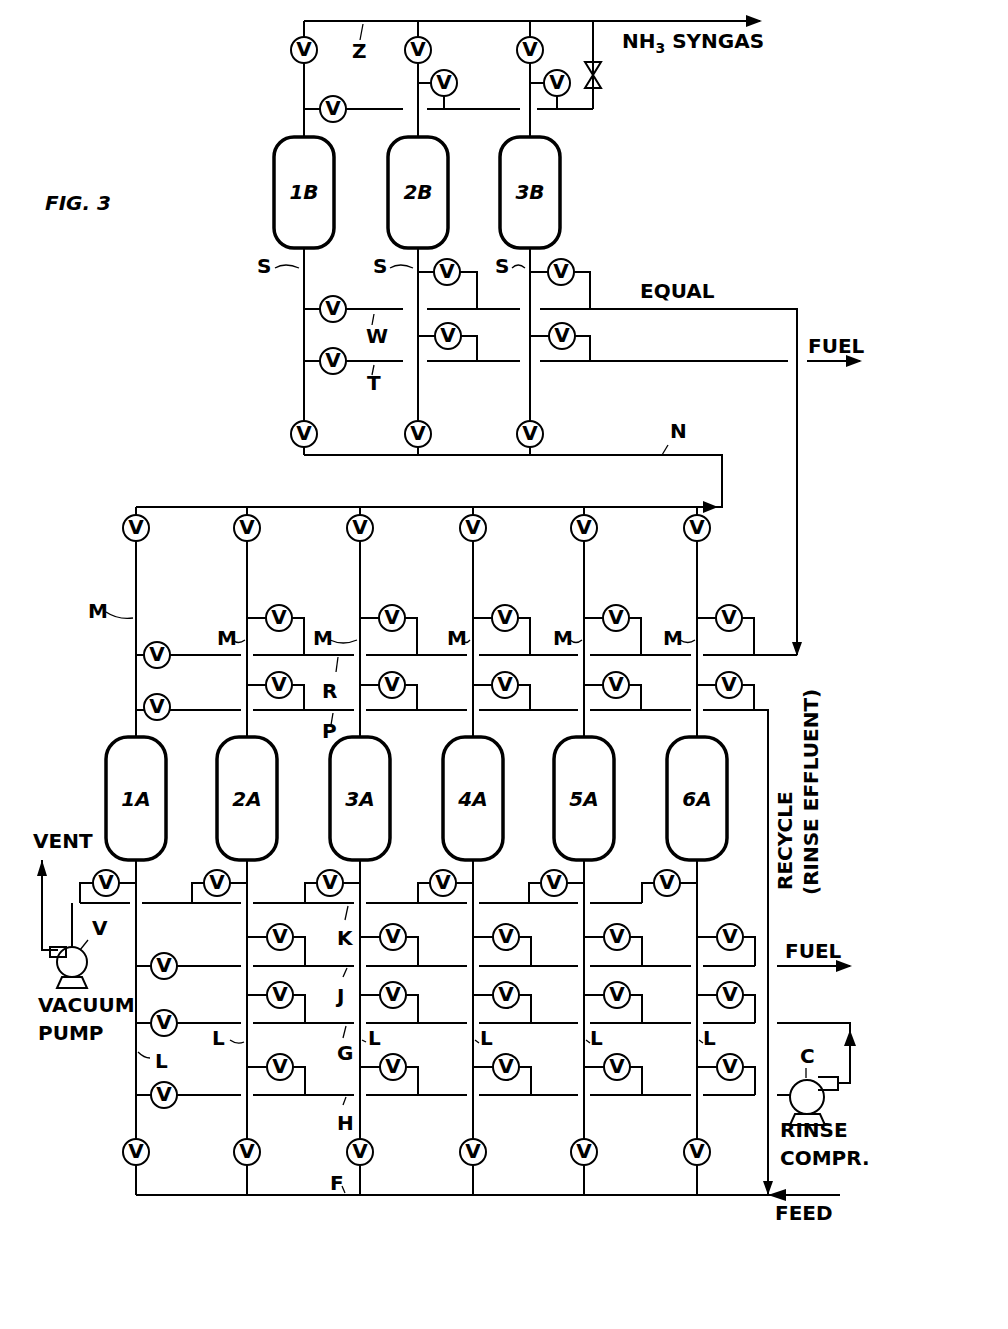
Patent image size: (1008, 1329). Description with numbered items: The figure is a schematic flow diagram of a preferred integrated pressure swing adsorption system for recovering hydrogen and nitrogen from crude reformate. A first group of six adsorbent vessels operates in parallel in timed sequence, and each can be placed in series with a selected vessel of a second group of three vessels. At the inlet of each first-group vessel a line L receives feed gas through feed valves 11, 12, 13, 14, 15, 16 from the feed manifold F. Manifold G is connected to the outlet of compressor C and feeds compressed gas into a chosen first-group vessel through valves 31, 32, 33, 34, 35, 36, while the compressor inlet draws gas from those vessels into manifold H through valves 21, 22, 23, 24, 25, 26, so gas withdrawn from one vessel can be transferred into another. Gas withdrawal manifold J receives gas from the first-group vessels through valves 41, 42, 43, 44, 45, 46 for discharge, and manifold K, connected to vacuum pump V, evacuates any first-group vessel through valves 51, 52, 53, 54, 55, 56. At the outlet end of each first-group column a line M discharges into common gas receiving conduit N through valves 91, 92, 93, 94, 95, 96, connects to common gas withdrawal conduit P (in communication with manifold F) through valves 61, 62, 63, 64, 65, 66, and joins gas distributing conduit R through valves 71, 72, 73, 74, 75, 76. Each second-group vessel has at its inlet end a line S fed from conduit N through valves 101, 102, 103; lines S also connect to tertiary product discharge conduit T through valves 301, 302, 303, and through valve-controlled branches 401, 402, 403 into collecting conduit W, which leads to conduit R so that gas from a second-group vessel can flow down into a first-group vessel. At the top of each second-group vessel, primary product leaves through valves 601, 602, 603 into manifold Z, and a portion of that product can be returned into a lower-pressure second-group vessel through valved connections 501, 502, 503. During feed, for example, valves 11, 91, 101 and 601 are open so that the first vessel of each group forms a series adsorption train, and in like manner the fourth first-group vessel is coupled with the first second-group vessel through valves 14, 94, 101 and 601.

The feed valve 11 is at (146, 1143).
The feed valve 12 is at (257, 1143).
The feed valve 13 is at (370, 1143).
The feed valve 14 is at (483, 1143).
The feed valve 15 is at (594, 1143).
The feed valve 16 is at (707, 1143).
The manifold H control valve 21 is at (171, 1084).
The manifold H control valve 22 is at (290, 1058).
The manifold H control valve 23 is at (403, 1058).
The manifold H control valve 24 is at (516, 1058).
The manifold H control valve 25 is at (627, 1058).
The manifold H control valve 26 is at (740, 1058).
The manifold G valve 31 is at (171, 1011).
The manifold G valve 32 is at (290, 986).
The manifold G valve 33 is at (403, 986).
The manifold G valve 34 is at (516, 986).
The manifold G valve 35 is at (627, 986).
The manifold G valve 36 is at (740, 986).
The manifold J control valve 41 is at (171, 954).
The manifold J control valve 42 is at (290, 928).
The manifold J control valve 43 is at (403, 928).
The manifold J control valve 44 is at (516, 928).
The manifold J control valve 45 is at (627, 928).
The manifold J control valve 46 is at (740, 928).
The manifold K control valve 51 is at (97, 876).
The manifold K control valve 52 is at (208, 876).
The manifold K control valve 53 is at (321, 876).
The manifold K control valve 54 is at (434, 876).
The manifold K control valve 55 is at (545, 876).
The manifold K control valve 56 is at (658, 876).
The conduit P control valve 61 is at (169, 700).
The conduit P control valve 62 is at (296, 672).
The conduit P control valve 63 is at (405, 683).
The conduit P control valve 64 is at (518, 683).
The conduit P control valve 65 is at (629, 683).
The conduit P control valve 66 is at (742, 683).
The conduit R valve 71 is at (175, 649).
The conduit R valve 72 is at (292, 616).
The conduit R valve 73 is at (405, 616).
The conduit R valve 74 is at (518, 616).
The conduit R valve 75 is at (629, 616).
The conduit R valve 76 is at (742, 616).
The conduit N control valve 91 is at (123, 528).
The conduit N control valve 92 is at (234, 528).
The conduit N control valve 93 is at (347, 528).
The conduit N control valve 94 is at (460, 528).
The conduit N control valve 95 is at (571, 528).
The conduit N control valve 96 is at (684, 528).
The line S control valve 101 is at (316, 436).
The line S control valve 102 is at (430, 436).
The line S control valve 103 is at (542, 436).
The tertiary product valve 301 is at (328, 353).
The tertiary product valve 302 is at (463, 336).
The tertiary product valve 303 is at (577, 336).
The valve-controlled branch 401 is at (326, 299).
The valve-controlled branch 402 is at (468, 292).
The valve-controlled branch 403 is at (582, 292).
The valved connection 501 is at (343, 103).
The valved connection 502 is at (457, 83).
The valved connection 503 is at (562, 111).
The primary product valve 601 is at (291, 50).
The primary product valve 602 is at (431, 50).
The primary product valve 603 is at (543, 50).